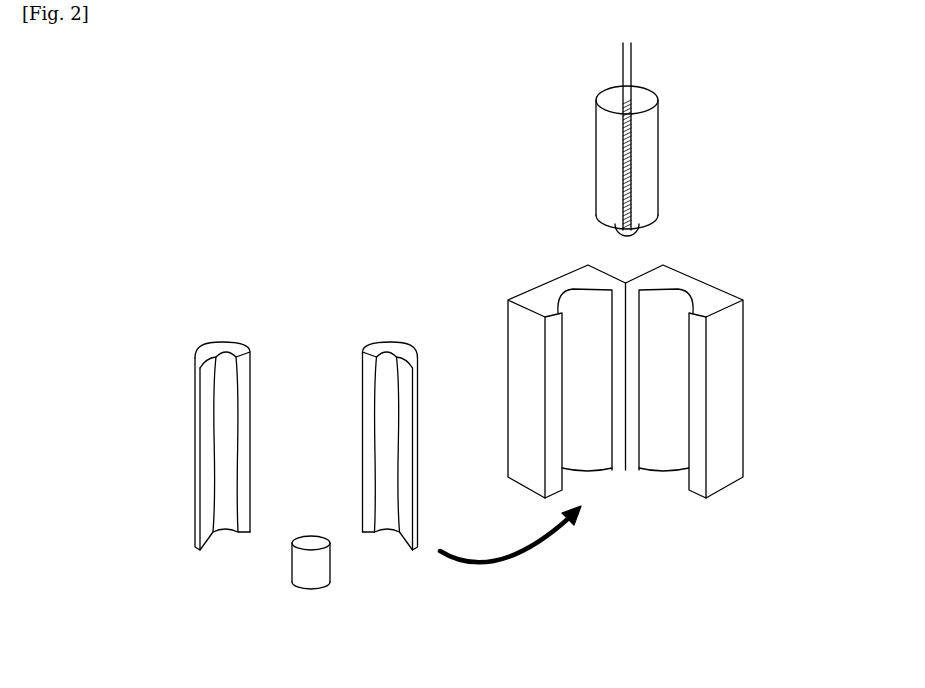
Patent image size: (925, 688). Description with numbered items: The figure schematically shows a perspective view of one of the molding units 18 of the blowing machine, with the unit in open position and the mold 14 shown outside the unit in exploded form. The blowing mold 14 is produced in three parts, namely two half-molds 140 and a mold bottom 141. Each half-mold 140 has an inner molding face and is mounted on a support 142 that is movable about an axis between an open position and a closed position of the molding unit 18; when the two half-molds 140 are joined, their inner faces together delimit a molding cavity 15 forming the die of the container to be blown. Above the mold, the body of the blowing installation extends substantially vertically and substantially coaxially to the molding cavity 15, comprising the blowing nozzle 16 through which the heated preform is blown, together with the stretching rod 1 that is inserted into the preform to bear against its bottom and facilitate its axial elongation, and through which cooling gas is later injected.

The stretching rod 1 is at (622, 65).
The blowing mold 14 is at (138, 425).
The half-mold 140 is at (207, 483).
The mold bottom 141 is at (300, 563).
The support 142 is at (529, 350).
The molding cavity 15 is at (387, 361).
The blowing nozzle 16 is at (666, 152).
The molding unit 18 is at (777, 213).